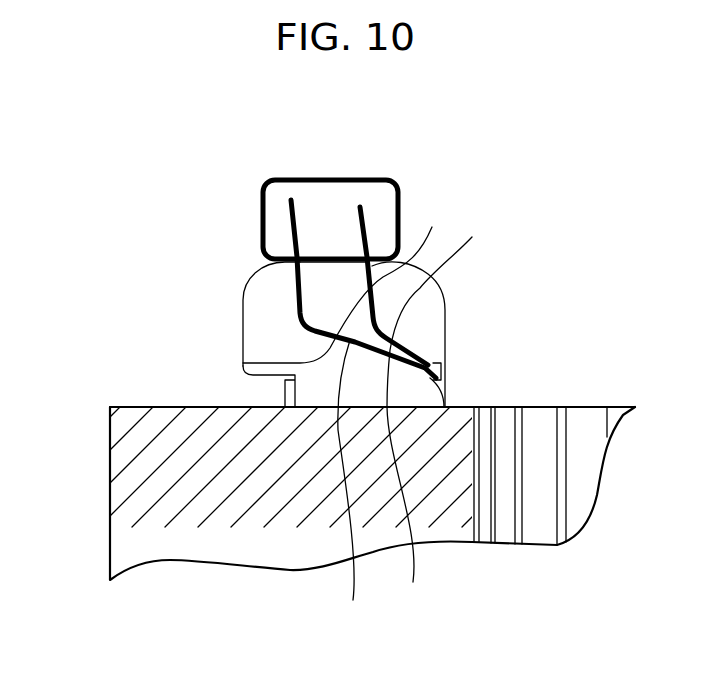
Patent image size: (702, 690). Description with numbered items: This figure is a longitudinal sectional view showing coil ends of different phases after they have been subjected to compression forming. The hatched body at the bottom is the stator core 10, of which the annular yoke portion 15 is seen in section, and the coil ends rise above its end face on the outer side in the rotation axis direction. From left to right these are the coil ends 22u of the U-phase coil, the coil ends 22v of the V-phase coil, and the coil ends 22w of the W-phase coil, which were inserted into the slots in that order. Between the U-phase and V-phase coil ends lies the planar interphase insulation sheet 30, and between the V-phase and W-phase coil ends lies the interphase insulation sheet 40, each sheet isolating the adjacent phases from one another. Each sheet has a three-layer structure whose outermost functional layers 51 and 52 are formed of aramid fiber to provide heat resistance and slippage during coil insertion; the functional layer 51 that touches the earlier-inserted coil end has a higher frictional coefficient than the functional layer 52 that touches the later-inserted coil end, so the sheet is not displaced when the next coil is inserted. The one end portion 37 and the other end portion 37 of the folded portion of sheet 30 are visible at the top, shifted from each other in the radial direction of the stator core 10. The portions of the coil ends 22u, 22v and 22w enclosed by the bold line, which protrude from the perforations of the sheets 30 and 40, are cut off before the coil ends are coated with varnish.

The stator core 10 is at (612, 396).
The yoke portion 15 is at (145, 464).
The coil ends of U-phase coil 22u is at (272, 287).
The coil ends of V-phase coil 22v is at (337, 268).
The coil ends of W-phase coil 22w is at (433, 292).
The interphase insulation sheet 30 is at (351, 487).
The end portion of folded portion 37 is at (281, 258).
The interphase insulation sheet 40 is at (430, 337).
The functional layer 51 is at (243, 363).
The functional layer 52 is at (364, 300).